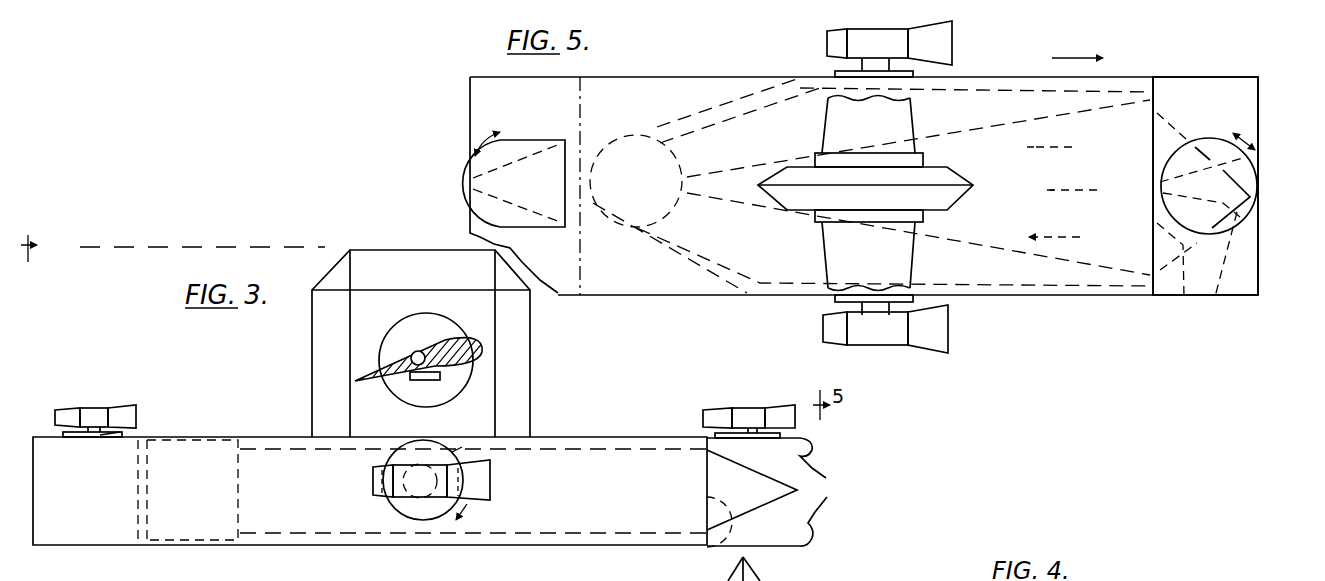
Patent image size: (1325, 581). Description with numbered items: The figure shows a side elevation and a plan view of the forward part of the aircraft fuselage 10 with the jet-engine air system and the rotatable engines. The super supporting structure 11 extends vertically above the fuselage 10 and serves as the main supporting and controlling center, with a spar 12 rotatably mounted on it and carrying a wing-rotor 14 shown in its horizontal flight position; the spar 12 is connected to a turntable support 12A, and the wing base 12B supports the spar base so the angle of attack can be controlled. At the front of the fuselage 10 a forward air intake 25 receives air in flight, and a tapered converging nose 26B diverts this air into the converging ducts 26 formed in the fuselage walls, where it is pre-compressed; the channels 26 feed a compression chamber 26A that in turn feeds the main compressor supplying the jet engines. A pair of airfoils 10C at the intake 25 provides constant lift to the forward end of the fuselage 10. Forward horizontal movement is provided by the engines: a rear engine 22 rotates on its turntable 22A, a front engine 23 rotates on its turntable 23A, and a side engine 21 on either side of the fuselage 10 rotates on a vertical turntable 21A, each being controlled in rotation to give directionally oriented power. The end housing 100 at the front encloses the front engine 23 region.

In FIG. 5, the fuselage 10 is at (748, 296).
In FIG. 3, the fuselage 10 is at (400, 546).
In FIG. 3, the airfoils 10C is at (817, 492).
In FIG. 3, the super supporting structure 11 is at (312, 328).
In FIG. 3, the spar 12 is at (394, 397).
In FIG. 3, the turntable support 12A is at (428, 383).
In FIG. 3, the wing base 12B is at (405, 318).
In FIG. 3, the wing-rotor 14 is at (447, 340).
In FIG. 5, the side engines 21 is at (938, 333).
In FIG. 3, the side engines 21 is at (490, 485).
In FIG. 5, the vertical turntable 21A is at (890, 307).
In FIG. 5, the rear engine 22 is at (478, 183).
In FIG. 3, the rear engine 22 is at (107, 412).
In FIG. 3, the turntable 22A is at (120, 435).
In FIG. 5, the front engine 23 is at (1217, 138).
In FIG. 3, the front engine 23 is at (740, 407).
In FIG. 3, the turntable 23A is at (720, 434).
In FIG. 5, the forward air intake 25 is at (1184, 300).
In FIG. 3, the forward air intake 25 is at (712, 548).
In FIG. 5, the converging ducts 26 is at (943, 88).
In FIG. 3, the converging ducts 26 is at (635, 443).
In FIG. 5, the compression chamber 26A is at (650, 142).
In FIG. 3, the compression chamber 26A is at (218, 533).
In FIG. 5, the converging nose 26B is at (1208, 305).
In FIG. 3, the converging nose 26B is at (797, 490).
In FIG. 5, the end housing 100 is at (1210, 58).